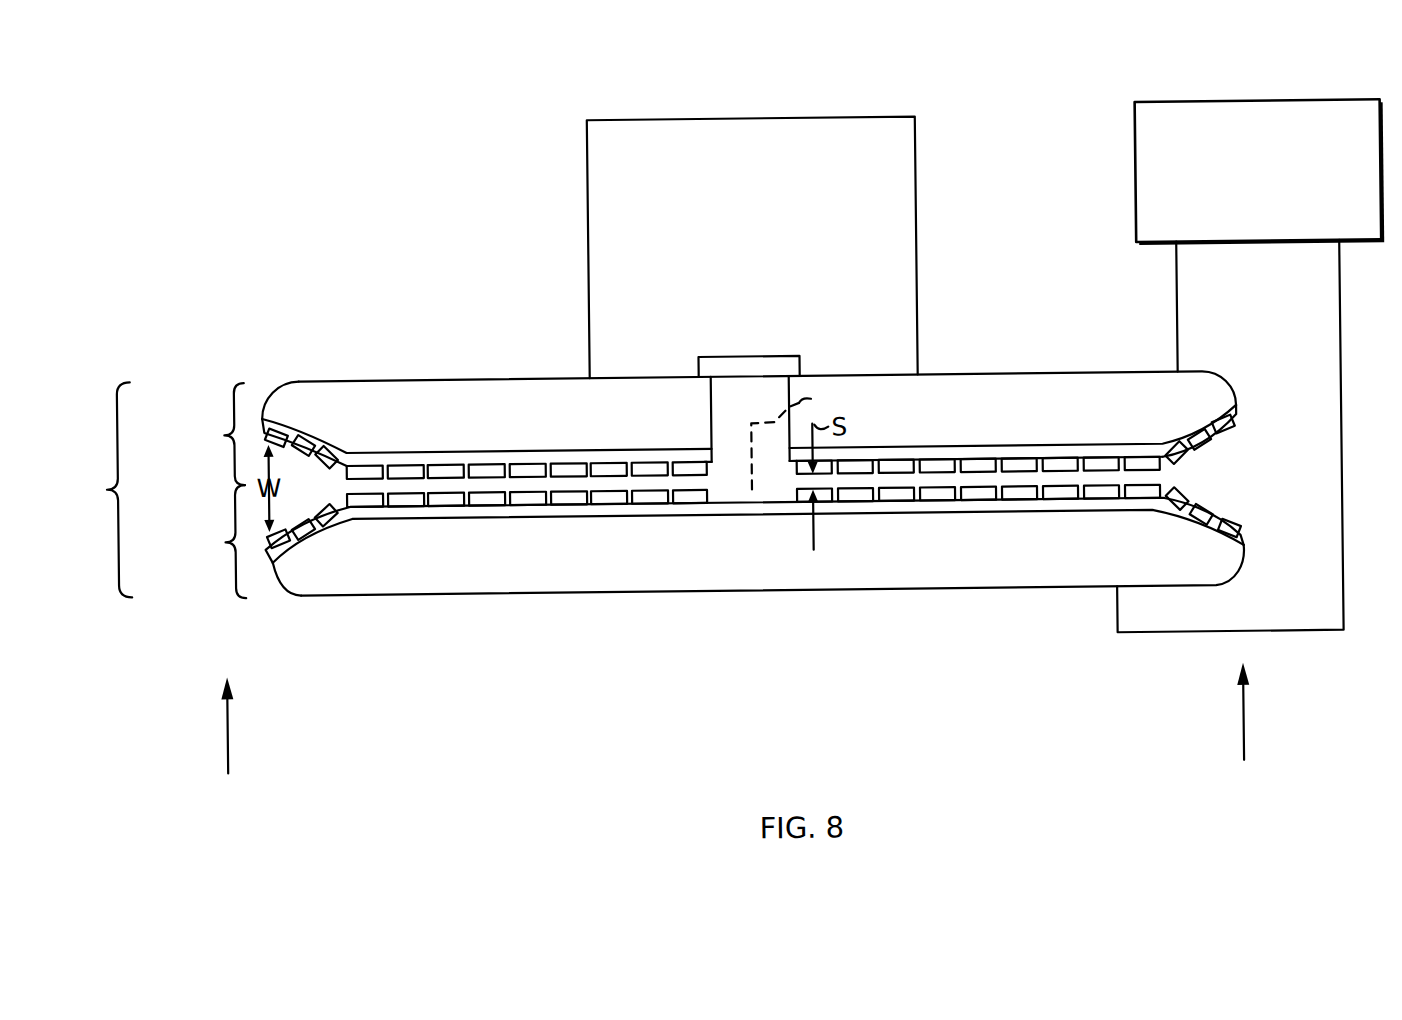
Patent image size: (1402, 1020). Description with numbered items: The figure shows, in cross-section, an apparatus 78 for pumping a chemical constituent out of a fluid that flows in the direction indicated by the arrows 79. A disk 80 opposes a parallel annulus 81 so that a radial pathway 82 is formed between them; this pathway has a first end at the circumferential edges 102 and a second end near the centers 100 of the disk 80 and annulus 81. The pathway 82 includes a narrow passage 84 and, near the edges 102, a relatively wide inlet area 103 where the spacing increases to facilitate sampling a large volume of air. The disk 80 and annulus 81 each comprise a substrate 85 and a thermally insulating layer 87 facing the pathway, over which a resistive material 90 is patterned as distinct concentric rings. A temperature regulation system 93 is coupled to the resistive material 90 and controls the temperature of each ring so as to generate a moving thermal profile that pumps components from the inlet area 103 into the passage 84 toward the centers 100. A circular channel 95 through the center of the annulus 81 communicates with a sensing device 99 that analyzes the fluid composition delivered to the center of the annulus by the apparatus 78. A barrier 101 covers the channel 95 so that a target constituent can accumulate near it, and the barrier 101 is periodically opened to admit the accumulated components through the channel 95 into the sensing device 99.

The apparatus 78 is at (97, 490).
The arrows 79 is at (225, 735).
The disk 80 is at (714, 536).
The annulus 81 is at (709, 428).
The radial pathway 82 is at (362, 484).
The passage 84 is at (453, 481).
The substrate 85 is at (567, 381).
The thermally insulating layer 87 is at (1000, 452).
The resistive material 90 is at (694, 462).
The temperature regulation system 93 is at (1250, 365).
The circular channel 95 is at (750, 419).
The sensing device 99 is at (752, 248).
The centers 100 is at (804, 438).
The barrier 101 is at (770, 363).
The circumferential edges 102 is at (1240, 419).
The inlet area 103 is at (302, 481).